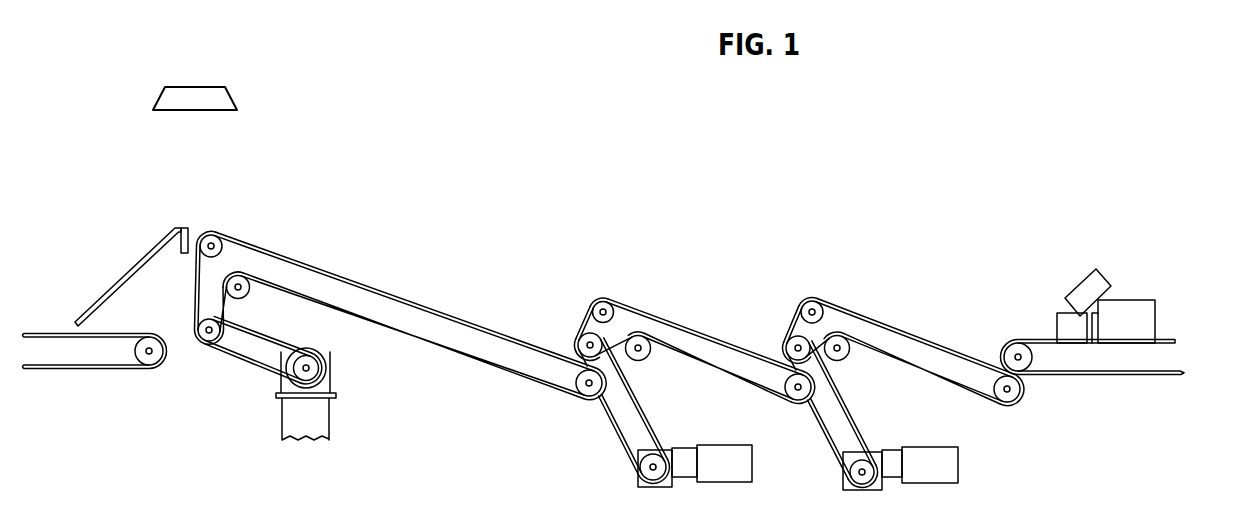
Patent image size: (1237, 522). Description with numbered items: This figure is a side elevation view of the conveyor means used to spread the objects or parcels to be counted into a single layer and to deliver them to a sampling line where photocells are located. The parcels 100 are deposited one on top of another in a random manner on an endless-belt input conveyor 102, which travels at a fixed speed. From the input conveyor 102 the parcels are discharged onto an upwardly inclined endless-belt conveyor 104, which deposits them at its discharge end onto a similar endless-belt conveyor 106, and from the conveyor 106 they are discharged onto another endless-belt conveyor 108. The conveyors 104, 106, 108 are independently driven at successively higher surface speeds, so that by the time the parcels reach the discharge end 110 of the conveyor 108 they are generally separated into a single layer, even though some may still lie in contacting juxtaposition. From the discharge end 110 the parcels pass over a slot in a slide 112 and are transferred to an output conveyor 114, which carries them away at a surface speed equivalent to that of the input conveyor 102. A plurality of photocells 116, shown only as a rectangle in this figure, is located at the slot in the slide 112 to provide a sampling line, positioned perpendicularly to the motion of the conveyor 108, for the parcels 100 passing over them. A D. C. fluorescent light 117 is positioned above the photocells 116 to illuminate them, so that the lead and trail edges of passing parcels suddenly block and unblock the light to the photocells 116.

The parcels 100 is at (1057, 322).
The input conveyor 102 is at (1167, 342).
The endless-belt conveyor 104 is at (887, 323).
The endless-belt conveyor 106 is at (680, 323).
The endless-belt conveyor 108 is at (400, 318).
The discharge end 110 is at (213, 232).
The slide 112 is at (128, 271).
The output conveyor 114 is at (42, 334).
The photocells 116 is at (178, 250).
The D. C. fluorescent light 117 is at (212, 92).